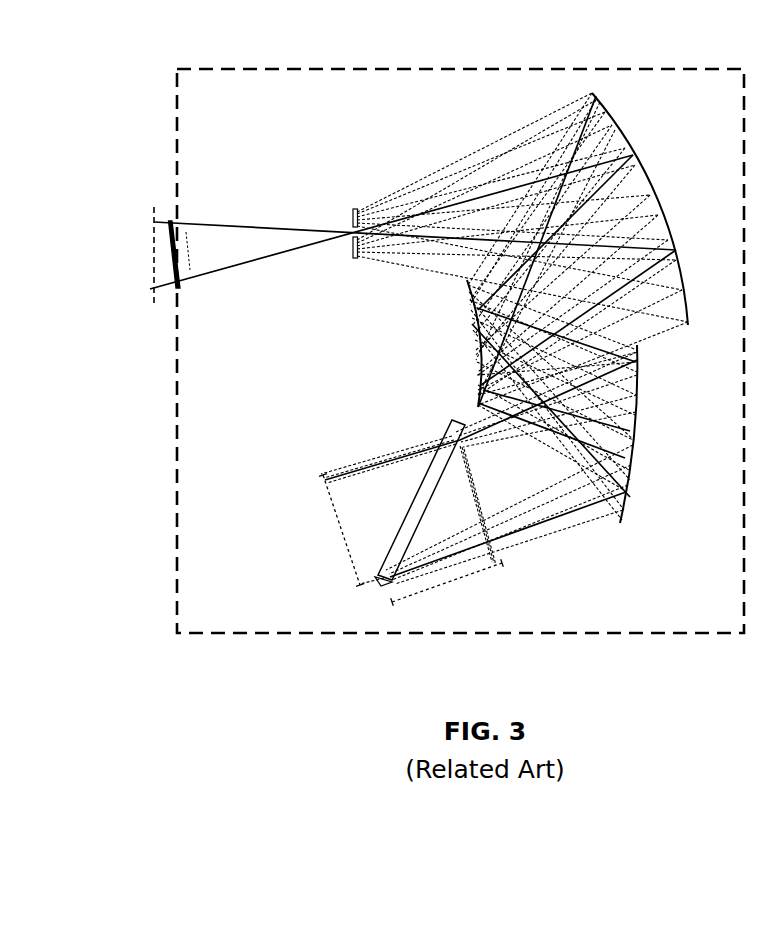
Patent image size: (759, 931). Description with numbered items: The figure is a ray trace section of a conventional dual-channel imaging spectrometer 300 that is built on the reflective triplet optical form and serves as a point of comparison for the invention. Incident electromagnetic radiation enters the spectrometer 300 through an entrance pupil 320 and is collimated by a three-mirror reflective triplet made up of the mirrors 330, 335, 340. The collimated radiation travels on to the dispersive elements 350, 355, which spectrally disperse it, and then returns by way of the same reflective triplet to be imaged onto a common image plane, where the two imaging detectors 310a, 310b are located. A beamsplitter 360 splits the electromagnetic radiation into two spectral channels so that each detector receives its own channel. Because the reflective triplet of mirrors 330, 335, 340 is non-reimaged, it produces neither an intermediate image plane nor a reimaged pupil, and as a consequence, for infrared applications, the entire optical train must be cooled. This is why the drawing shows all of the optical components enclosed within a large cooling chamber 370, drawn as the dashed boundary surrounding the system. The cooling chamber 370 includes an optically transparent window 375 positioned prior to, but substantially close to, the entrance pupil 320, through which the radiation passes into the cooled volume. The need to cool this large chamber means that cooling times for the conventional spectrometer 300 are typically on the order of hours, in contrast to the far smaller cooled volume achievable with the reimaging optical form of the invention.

The conventional dual-channel imaging spectrometer 300 is at (105, 99).
The imaging detector 310a is at (352, 210).
The imaging detector 310b is at (353, 258).
The entrance pupil 320 is at (192, 262).
The mirror 330 is at (641, 431).
The mirror 335 is at (478, 348).
The mirror 340 is at (655, 177).
The dispersive element 350 is at (340, 532).
The dispersive element 355 is at (472, 578).
The beamsplitter 360 is at (437, 465).
The cooling chamber 370 is at (677, 67).
The optically transparent window 375 is at (167, 273).